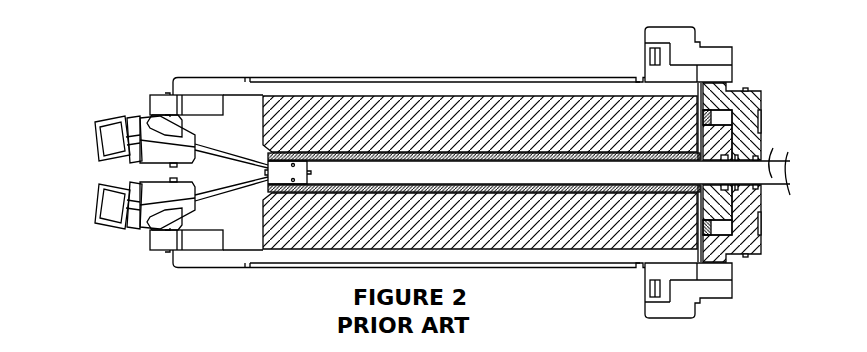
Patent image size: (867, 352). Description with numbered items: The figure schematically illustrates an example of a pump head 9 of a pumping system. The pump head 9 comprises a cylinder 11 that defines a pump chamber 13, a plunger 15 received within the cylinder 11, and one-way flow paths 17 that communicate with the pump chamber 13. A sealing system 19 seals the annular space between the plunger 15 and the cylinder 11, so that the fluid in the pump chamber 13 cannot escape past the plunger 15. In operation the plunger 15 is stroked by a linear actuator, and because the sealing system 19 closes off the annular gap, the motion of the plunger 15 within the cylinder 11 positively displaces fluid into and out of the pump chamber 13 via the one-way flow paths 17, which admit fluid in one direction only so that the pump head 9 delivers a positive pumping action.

The pump head 9 is at (150, 65).
The cylinder 11 is at (448, 131).
The pump chamber 13 is at (297, 167).
The plunger 15 is at (772, 150).
The one-way flow paths 17 is at (93, 212).
The sealing system 19 is at (720, 197).